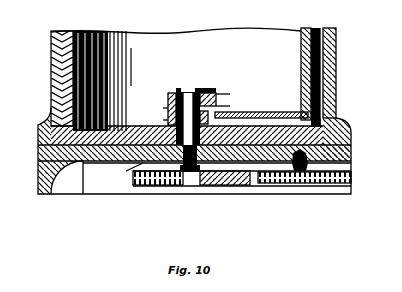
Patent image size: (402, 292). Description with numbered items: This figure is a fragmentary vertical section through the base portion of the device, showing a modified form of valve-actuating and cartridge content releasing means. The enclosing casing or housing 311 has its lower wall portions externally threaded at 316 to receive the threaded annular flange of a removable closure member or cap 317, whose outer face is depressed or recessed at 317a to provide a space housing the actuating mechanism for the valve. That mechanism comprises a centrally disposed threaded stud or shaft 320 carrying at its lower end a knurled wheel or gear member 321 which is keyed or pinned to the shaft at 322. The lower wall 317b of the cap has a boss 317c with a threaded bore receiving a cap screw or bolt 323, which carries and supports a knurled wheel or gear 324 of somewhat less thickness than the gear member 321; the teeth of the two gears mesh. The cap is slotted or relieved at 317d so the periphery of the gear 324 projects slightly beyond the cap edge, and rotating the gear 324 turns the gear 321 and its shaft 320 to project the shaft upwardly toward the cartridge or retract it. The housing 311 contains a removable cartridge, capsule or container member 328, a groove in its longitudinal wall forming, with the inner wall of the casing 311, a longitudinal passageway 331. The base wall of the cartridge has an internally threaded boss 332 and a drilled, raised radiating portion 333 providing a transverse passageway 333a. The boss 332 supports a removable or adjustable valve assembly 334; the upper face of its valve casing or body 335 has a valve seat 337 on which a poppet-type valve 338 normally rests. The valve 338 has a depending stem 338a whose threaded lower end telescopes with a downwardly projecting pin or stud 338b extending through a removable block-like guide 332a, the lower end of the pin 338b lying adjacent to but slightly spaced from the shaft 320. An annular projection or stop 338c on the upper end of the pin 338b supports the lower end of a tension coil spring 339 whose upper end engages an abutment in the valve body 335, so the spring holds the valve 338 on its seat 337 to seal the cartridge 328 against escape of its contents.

The casing or housing 311 is at (328, 52).
The externally threaded lower wall portion 316 is at (345, 123).
The removable closure member or cap 317 is at (33, 186).
The recess of cap 317a is at (76, 186).
The lower wall of cap 317b is at (343, 138).
The boss of cap 317c is at (343, 155).
The slot of cap 317d is at (335, 179).
The threaded stud or shaft 320 is at (207, 177).
The knurled wheel or gear member 321 is at (148, 178).
The key or pin 322 is at (185, 180).
The cap screw or bolt 323 is at (292, 177).
The knurled wheel or gear 324 is at (318, 174).
The cartridge, capsule or container member 328 is at (280, 36).
The longitudinal passageway 331 is at (328, 30).
The internally threaded boss 332 is at (158, 108).
The block-like member or guide 332a is at (155, 112).
The radiating portion 333 is at (270, 100).
The transverse passageway 333a is at (326, 104).
The valve assembly 334 is at (163, 86).
The valve casing or body 335 is at (208, 96).
The valve seat 337 is at (208, 81).
The poppet-type valve 338 is at (179, 83).
The valve stem 338a is at (196, 80).
The pin or stud 338b is at (124, 171).
The annular projection or stop 338c is at (155, 100).
The tension coil spring 339 is at (175, 83).